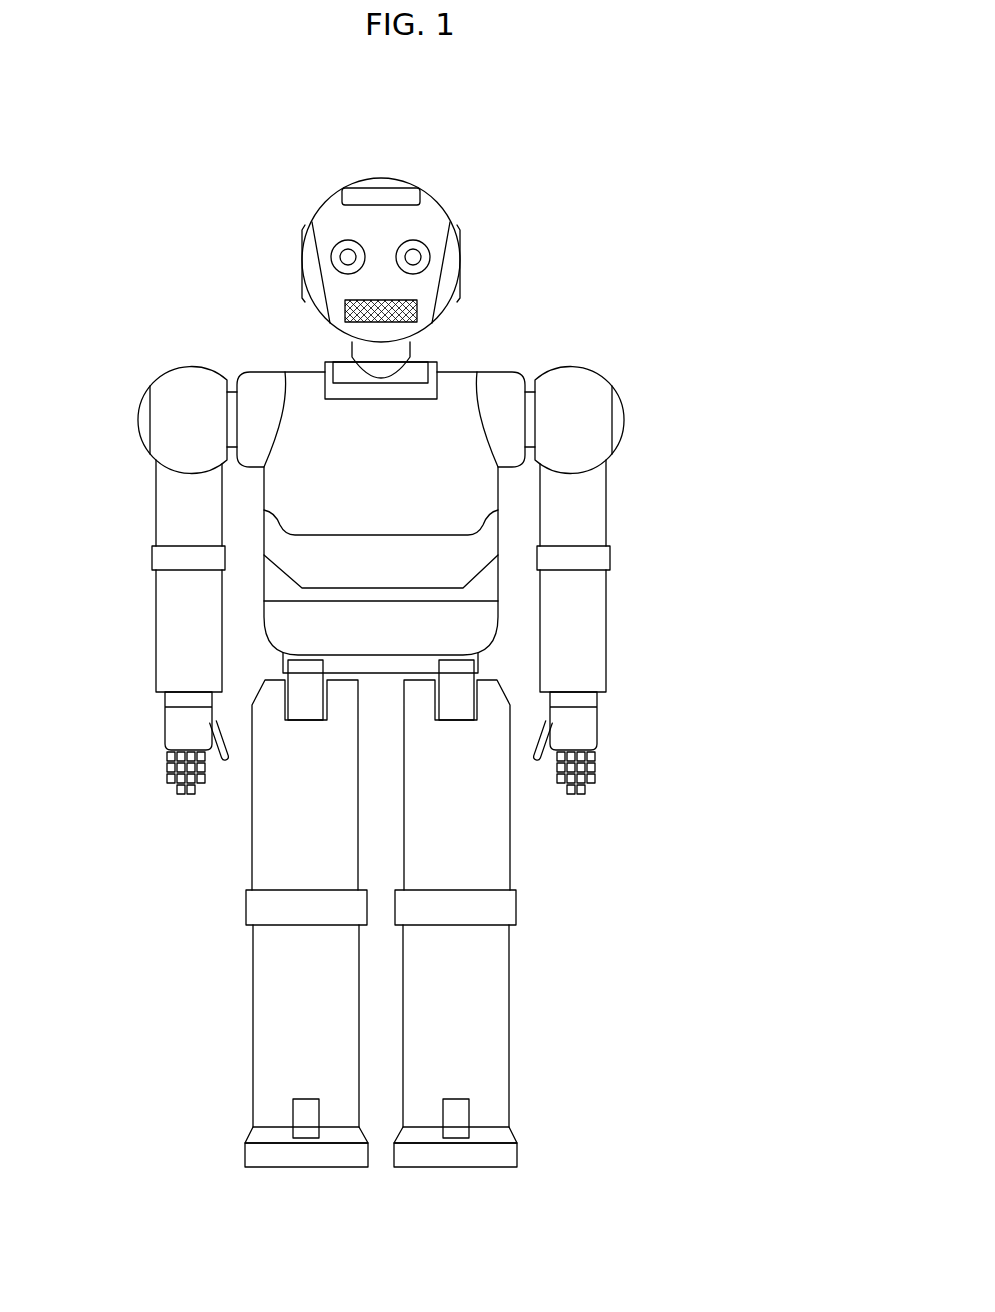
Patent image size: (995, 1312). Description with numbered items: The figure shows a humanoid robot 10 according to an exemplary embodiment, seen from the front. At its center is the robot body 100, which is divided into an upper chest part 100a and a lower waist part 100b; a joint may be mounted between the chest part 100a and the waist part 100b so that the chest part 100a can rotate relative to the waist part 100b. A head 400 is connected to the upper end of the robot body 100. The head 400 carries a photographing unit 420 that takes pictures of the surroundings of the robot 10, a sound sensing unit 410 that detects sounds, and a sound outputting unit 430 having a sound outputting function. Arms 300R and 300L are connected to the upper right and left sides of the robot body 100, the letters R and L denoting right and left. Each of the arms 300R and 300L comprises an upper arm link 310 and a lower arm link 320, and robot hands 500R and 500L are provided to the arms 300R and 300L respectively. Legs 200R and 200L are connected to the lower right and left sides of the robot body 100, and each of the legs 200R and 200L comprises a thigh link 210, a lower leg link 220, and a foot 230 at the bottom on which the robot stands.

The robot 10 is at (658, 163).
The head 400 is at (458, 196).
The sound sensing unit 410 is at (461, 263).
The photographing unit 420 is at (348, 257).
The sound outputting unit 430 is at (410, 306).
The robot body 100 is at (723, 583).
The chest part 100a is at (505, 560).
The waist part 100b is at (505, 625).
The right arm 300R is at (150, 557).
The left arm 300L is at (614, 521).
The upper arm link 310 is at (167, 500).
The lower arm link 320 is at (167, 641).
The right robot hand 500R is at (150, 737).
The left robot hand 500L is at (614, 740).
The right leg 200R is at (234, 913).
The left leg 200L is at (527, 912).
The thigh link 210 is at (260, 849).
The lower leg link 220 is at (260, 999).
The foot 230 is at (262, 1135).